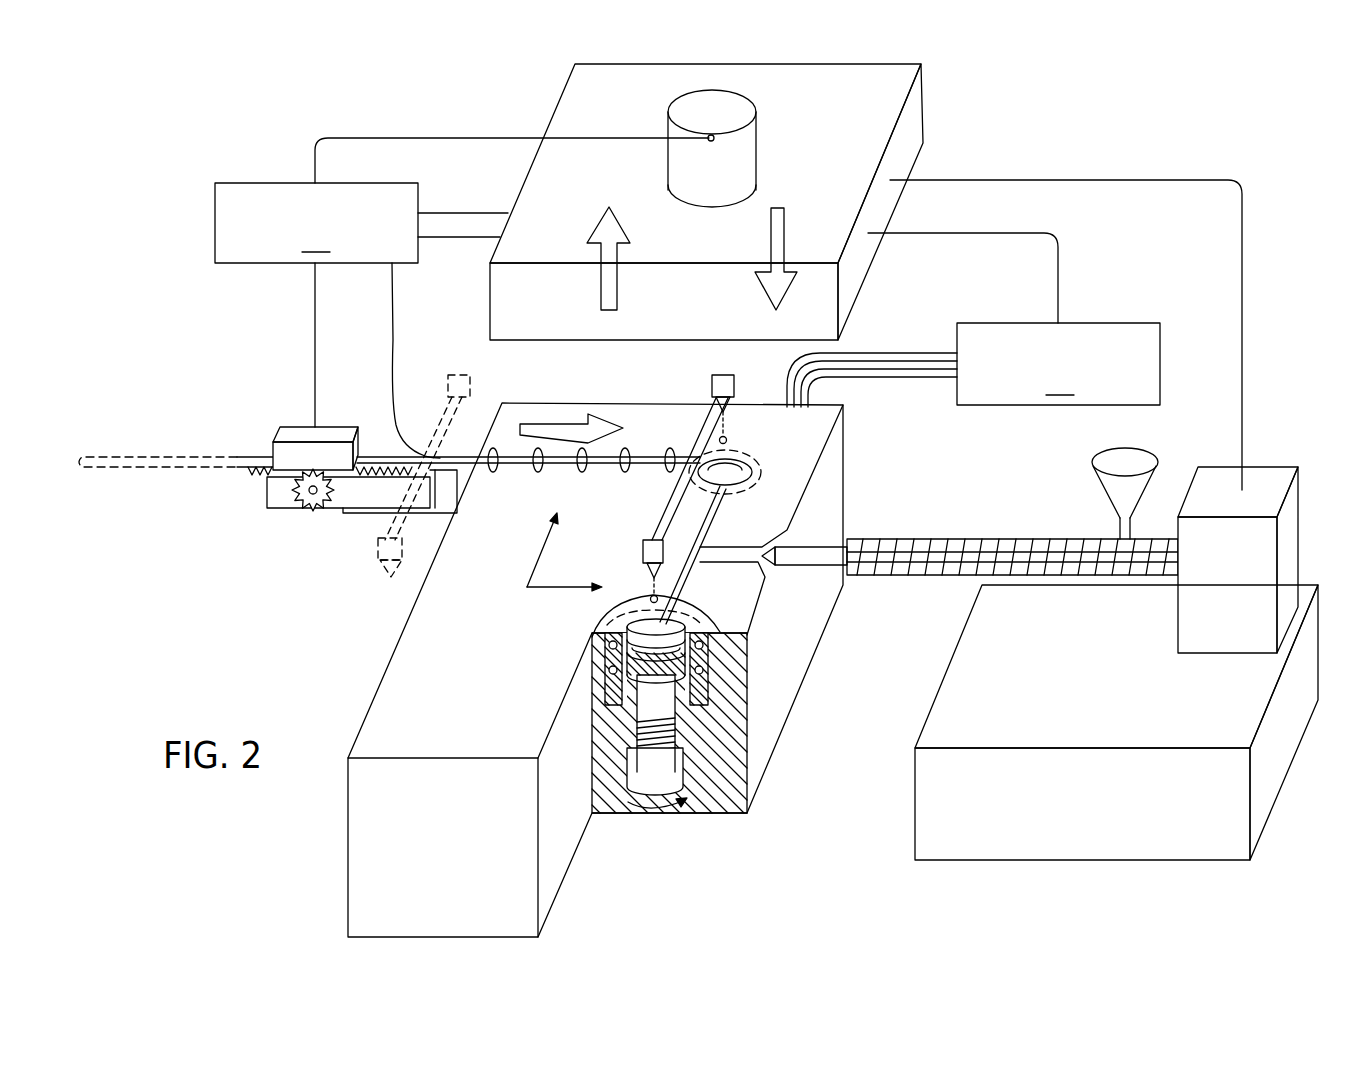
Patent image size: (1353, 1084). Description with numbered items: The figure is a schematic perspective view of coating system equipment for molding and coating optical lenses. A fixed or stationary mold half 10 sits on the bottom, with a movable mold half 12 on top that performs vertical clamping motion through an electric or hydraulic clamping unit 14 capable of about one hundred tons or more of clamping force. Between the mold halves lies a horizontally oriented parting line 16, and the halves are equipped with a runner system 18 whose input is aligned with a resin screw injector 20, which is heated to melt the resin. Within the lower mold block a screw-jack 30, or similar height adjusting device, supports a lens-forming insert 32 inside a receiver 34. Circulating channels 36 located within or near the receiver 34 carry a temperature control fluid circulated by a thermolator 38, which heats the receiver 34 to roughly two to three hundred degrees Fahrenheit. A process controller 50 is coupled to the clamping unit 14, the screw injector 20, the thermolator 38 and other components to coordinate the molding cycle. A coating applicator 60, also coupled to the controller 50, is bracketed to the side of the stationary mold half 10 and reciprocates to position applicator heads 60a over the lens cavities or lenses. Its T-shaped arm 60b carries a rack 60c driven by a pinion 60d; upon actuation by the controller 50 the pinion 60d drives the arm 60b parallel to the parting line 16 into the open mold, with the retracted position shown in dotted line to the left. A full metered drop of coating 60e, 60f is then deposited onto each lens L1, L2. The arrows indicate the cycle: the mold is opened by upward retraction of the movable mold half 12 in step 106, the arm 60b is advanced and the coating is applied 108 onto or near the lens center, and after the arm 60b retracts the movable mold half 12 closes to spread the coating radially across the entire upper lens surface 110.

The stationary mold half 10 is at (473, 719).
The movable mold half 12 is at (870, 117).
The clamping unit 14 is at (730, 181).
The parting line 16 is at (543, 555).
The runner system 18 is at (690, 572).
The resin screw injector 20 is at (1010, 518).
The screw-jack 30 is at (738, 813).
The lens-forming insert 32 is at (682, 757).
The receiver 34 is at (662, 673).
The circulating channels 36 is at (708, 690).
The thermolator 38 is at (973, 365).
The process controller 50 is at (728, 314).
The coating applicator 60 is at (247, 550).
The applicator heads 60a is at (712, 383).
The arm 60b is at (515, 468).
The rack 60c is at (260, 474).
The pinion 60d is at (310, 507).
The drop of coating 60e is at (727, 433).
The drop of coating 60f is at (592, 637).
The mold opening step 106 is at (607, 298).
The coating application step 108 is at (543, 427).
The coating spreading step 110 is at (773, 235).
The lens L1 is at (757, 470).
The lens L2 is at (708, 648).